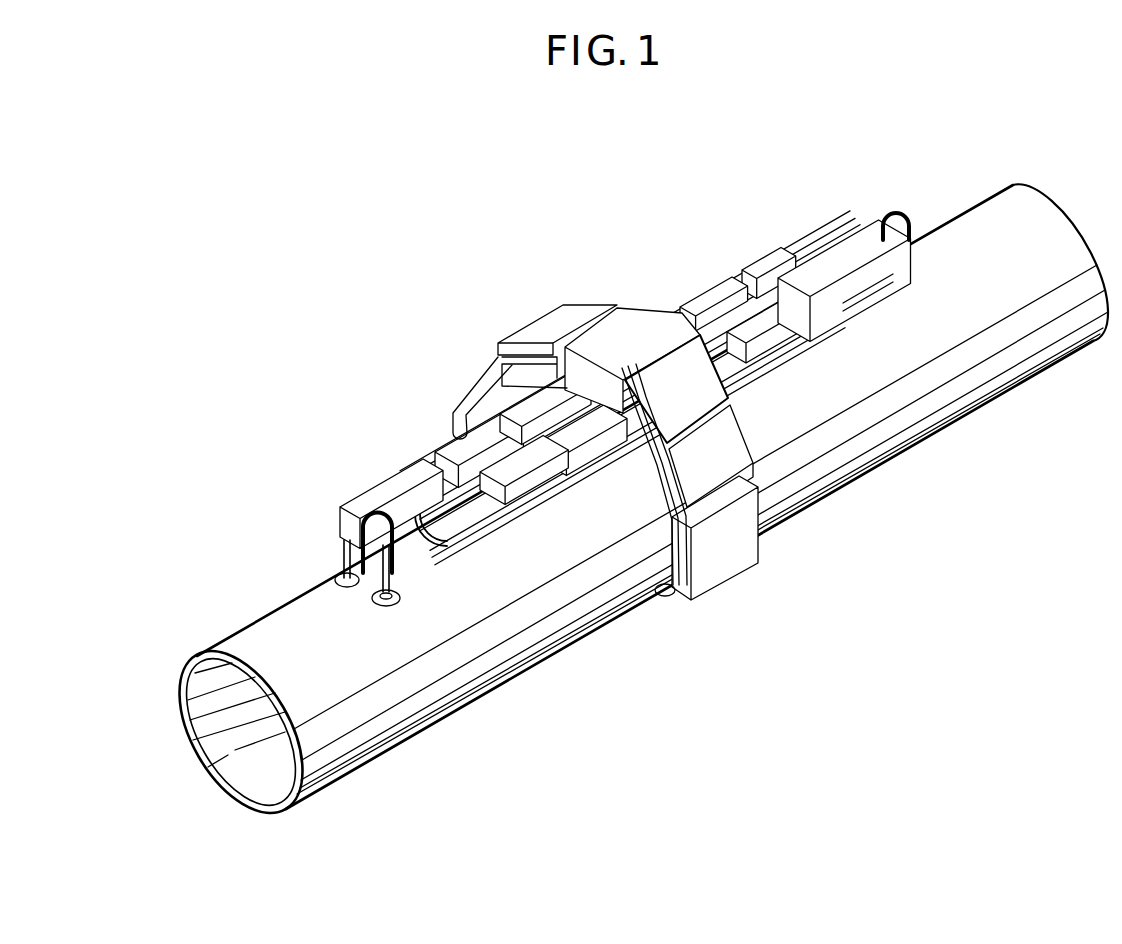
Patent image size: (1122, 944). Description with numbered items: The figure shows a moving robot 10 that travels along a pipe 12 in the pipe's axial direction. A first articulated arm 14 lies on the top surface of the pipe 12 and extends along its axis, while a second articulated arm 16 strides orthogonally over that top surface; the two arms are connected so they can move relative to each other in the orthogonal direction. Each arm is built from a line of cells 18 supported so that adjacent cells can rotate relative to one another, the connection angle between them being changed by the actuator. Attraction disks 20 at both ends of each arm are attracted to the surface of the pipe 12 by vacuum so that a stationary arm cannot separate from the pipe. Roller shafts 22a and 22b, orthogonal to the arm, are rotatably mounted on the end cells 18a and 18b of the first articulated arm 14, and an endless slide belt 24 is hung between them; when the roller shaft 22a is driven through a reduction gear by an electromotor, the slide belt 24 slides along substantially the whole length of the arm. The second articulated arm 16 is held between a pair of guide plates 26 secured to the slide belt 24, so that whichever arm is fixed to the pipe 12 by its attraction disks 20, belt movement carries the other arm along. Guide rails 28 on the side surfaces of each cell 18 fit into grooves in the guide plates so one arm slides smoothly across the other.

The moving robot 10 is at (753, 244).
The pipe 12 is at (412, 710).
The first articulated arm 14 is at (720, 297).
The second articulated arm 16 is at (747, 520).
The cell 18 is at (640, 485).
The cell 18a is at (388, 487).
The cell 18b is at (905, 278).
The attraction disk 20 is at (338, 575).
The roller shaft 22a is at (443, 565).
The roller shaft 22b is at (884, 218).
The slide belt 24 is at (840, 250).
The guide plate 26 is at (593, 357).
The guide rail 28 is at (778, 360).